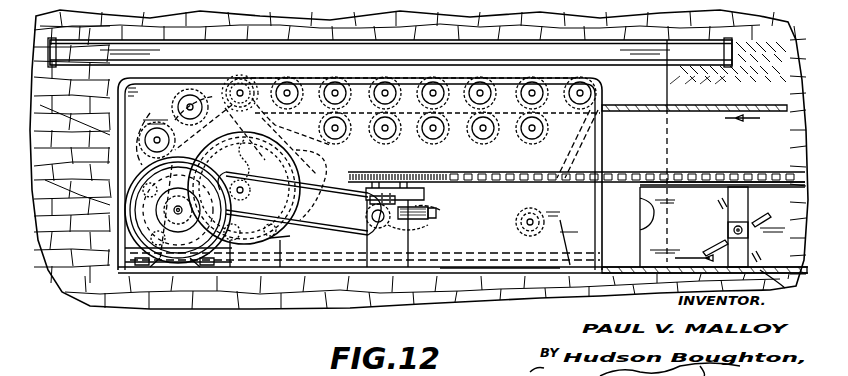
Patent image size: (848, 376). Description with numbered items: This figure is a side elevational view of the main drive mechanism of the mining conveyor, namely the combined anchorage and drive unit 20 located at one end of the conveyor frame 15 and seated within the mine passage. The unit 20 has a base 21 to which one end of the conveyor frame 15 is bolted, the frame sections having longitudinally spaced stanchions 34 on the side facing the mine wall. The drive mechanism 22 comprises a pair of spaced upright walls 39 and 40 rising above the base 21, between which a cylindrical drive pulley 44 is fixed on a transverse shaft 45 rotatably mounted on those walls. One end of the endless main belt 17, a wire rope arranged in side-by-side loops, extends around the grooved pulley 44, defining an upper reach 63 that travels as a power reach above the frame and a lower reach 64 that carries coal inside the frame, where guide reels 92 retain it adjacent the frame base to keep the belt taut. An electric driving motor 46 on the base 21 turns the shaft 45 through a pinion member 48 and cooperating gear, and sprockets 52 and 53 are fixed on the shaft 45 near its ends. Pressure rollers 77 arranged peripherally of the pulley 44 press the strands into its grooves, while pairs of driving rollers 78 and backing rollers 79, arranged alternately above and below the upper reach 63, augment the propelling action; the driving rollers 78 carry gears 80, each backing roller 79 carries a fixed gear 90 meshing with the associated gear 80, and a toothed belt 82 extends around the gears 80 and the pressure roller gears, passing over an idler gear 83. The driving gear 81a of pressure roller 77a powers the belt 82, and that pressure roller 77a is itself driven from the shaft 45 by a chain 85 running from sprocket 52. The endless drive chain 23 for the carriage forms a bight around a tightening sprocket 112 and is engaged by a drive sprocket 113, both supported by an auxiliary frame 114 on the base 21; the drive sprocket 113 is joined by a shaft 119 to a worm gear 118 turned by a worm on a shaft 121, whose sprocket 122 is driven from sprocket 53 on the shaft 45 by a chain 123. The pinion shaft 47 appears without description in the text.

The conveyor frame 15 is at (708, 174).
The endless main belt 17 is at (748, 105).
The combined anchorage and drive unit 20 is at (490, 238).
The base 21 is at (584, 268).
The drive mechanism 22 is at (152, 118).
The endless drive chain 23 is at (682, 172).
The stanchions 34 is at (750, 204).
The upright wall 39 is at (780, 276).
The upright wall 40 is at (594, 164).
The cylindrical drive pulley 44 is at (314, 174).
The transverse shaft 45 is at (250, 210).
The electric driving motor 46 is at (163, 262).
The pinion shaft 47 is at (279, 248).
The pinion member 48 is at (178, 212).
The sprocket 52 is at (232, 107).
The sprocket 53 is at (258, 169).
The upper reach 63 is at (719, 105).
The lower reach 64 is at (626, 260).
The pressure rollers 77 is at (166, 100).
The pressure roller 77a is at (240, 78).
The driving rollers 78 is at (384, 78).
The backing rollers 79 is at (446, 78).
The gears 80 is at (400, 78).
The driving gear 81a is at (232, 82).
The toothed belt or chain 82 is at (588, 132).
The idler gear 83 is at (544, 218).
The chain 85 is at (520, 155).
The fixed gear 90 is at (546, 78).
The guide reels 92 is at (717, 206).
The tightening sprocket 112 is at (395, 172).
The drive sprocket 113 is at (425, 187).
The auxiliary frame 114 is at (407, 248).
The worm gear 118 is at (420, 217).
The shaft 119 is at (440, 212).
The shaft 121 is at (442, 246).
The sprocket 122 is at (360, 212).
The chain 123 is at (319, 230).